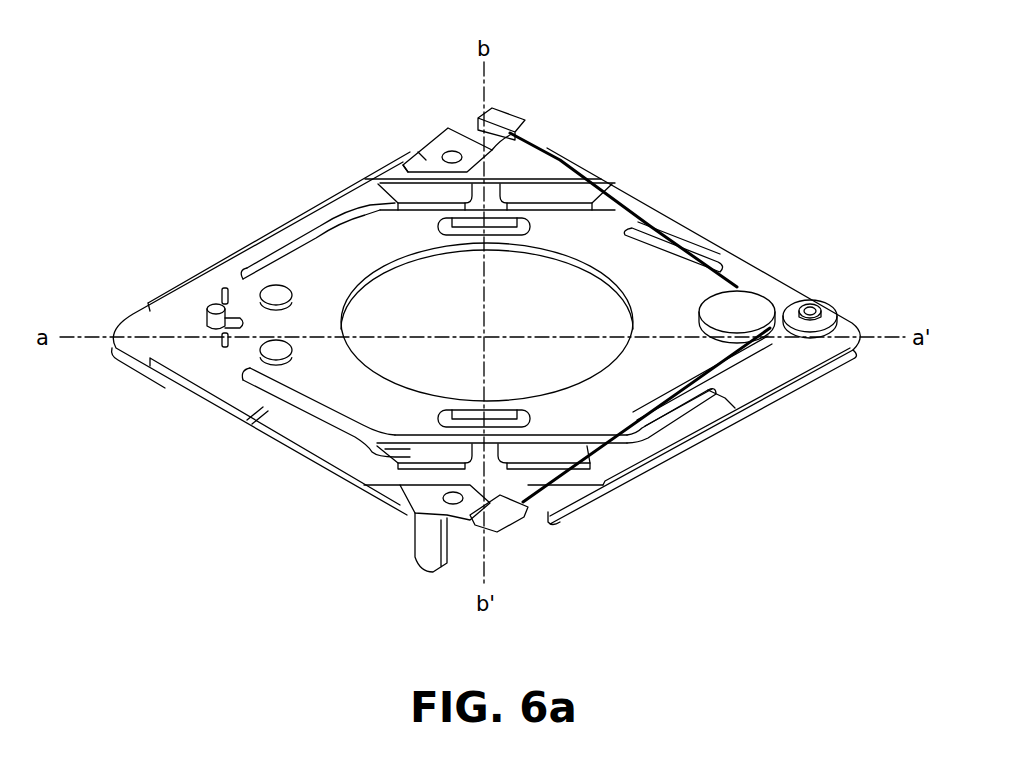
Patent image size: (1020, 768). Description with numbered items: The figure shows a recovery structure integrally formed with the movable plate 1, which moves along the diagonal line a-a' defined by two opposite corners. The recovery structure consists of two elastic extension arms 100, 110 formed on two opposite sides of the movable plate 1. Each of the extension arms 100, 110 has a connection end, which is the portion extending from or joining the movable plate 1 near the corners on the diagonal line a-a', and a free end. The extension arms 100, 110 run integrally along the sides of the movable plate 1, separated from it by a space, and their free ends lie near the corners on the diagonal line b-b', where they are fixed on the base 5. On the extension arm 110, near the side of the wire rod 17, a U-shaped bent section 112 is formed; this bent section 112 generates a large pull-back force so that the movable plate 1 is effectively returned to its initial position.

The movable plate 1 is at (806, 289).
The base 5 is at (203, 403).
The wire rod 17 is at (747, 318).
The elastic extension arm 100 is at (323, 430).
The elastic extension arm 110 is at (728, 411).
The U-shaped bent section 112 is at (667, 413).